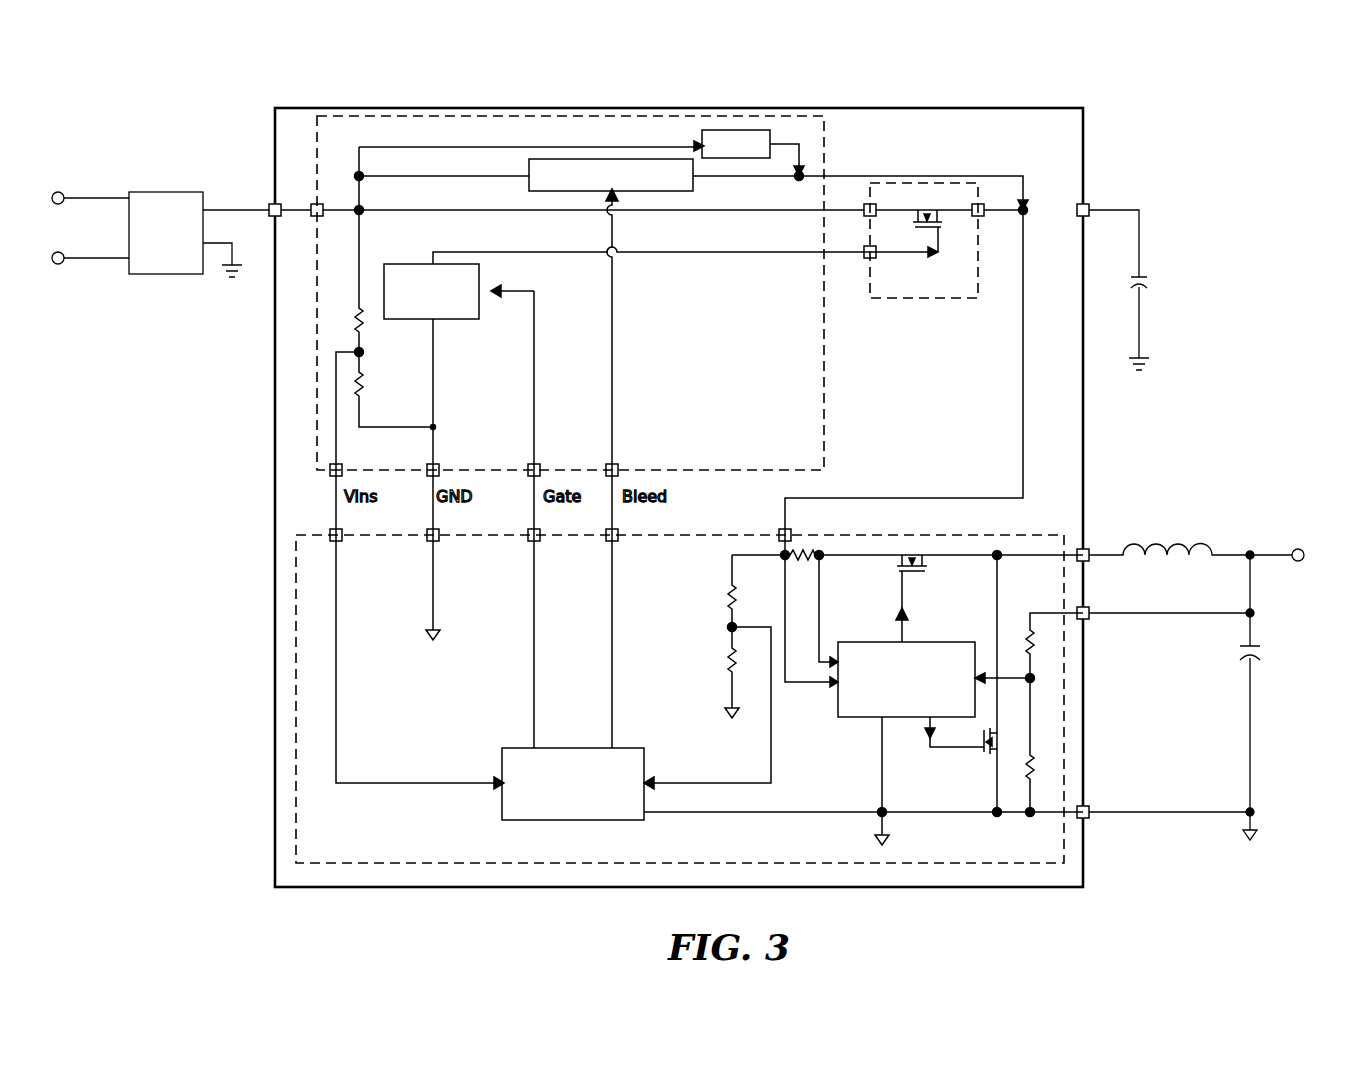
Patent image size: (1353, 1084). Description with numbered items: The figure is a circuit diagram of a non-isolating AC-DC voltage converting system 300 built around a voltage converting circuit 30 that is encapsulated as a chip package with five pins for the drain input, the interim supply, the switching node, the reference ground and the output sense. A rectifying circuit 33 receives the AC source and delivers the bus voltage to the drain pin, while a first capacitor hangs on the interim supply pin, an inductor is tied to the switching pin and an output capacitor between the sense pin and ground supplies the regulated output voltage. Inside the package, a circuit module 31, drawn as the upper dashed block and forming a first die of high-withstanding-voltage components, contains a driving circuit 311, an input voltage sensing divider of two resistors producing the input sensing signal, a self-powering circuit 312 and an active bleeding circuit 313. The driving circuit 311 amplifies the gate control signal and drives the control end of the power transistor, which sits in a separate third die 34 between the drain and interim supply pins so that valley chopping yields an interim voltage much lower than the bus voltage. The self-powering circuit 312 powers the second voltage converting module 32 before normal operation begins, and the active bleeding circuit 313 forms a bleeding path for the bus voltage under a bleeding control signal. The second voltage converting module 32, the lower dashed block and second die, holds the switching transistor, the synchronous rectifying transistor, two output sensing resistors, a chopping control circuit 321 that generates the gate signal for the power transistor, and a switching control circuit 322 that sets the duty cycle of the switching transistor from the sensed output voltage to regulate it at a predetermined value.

The voltage converting circuit 30 is at (1083, 108).
The AC-DC voltage converting system 300 is at (1178, 97).
The rectifying circuit 33 is at (160, 192).
The circuit module 31 is at (672, 271).
The driving circuit 311 is at (460, 319).
The self-powering circuit 312 is at (735, 130).
The active bleeding circuit 313 is at (693, 190).
The third die 34 is at (930, 298).
The second voltage converting module 32 is at (689, 536).
The chopping control circuit 321 is at (573, 820).
The switching control circuit 322 is at (851, 717).